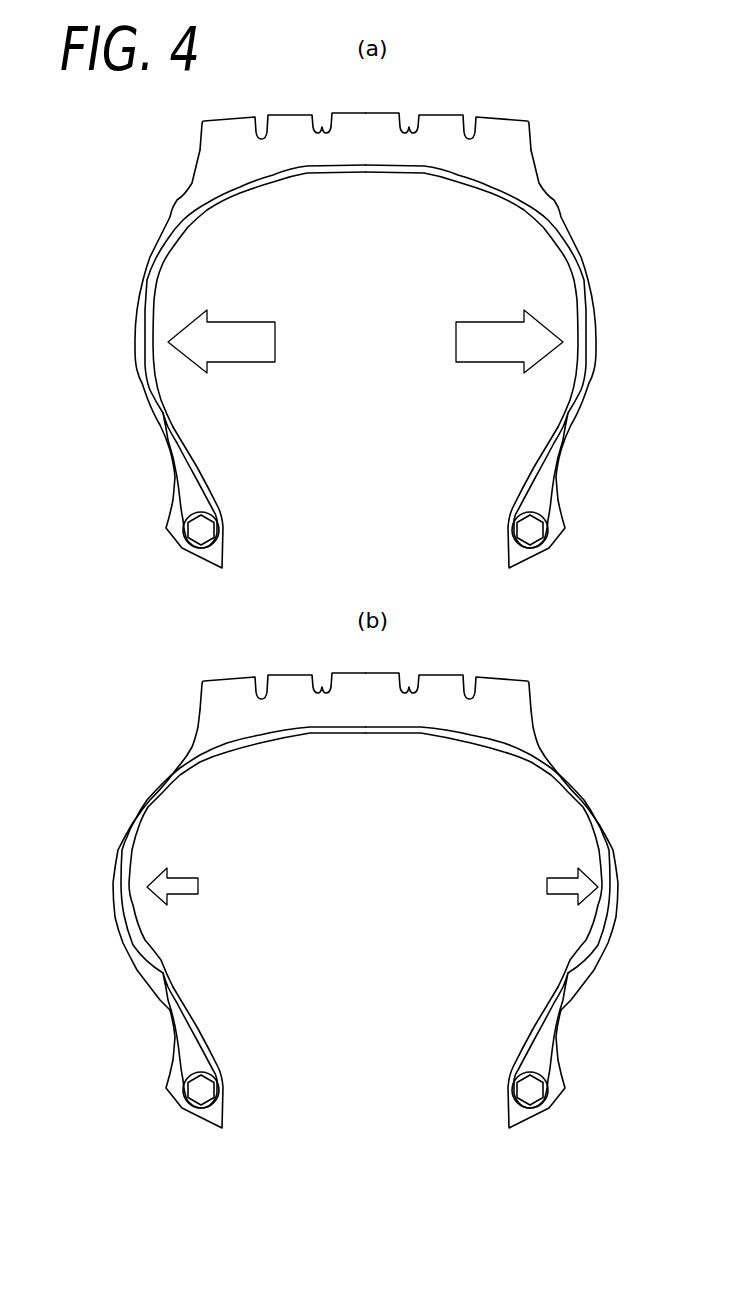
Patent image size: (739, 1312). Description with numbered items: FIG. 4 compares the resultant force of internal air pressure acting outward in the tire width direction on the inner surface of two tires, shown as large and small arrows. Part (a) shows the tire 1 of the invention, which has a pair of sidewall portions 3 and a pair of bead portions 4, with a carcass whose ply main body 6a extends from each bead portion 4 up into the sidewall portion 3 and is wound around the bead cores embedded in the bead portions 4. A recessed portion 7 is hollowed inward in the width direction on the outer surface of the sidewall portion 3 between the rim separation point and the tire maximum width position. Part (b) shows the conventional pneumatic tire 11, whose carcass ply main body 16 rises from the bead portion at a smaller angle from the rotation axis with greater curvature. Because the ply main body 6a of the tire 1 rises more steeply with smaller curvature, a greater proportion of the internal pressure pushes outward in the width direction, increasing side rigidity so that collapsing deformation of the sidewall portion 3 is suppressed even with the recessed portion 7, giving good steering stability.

The tire 1 is at (603, 134).
The sidewall portion 3 is at (152, 230).
The bead portion 4 is at (182, 569).
The ply main body 6a is at (136, 339).
The recessed portion 7 is at (156, 477).
The conventional pneumatic tire 11 is at (611, 700).
The sidewall reinforcing layer 16 is at (120, 892).